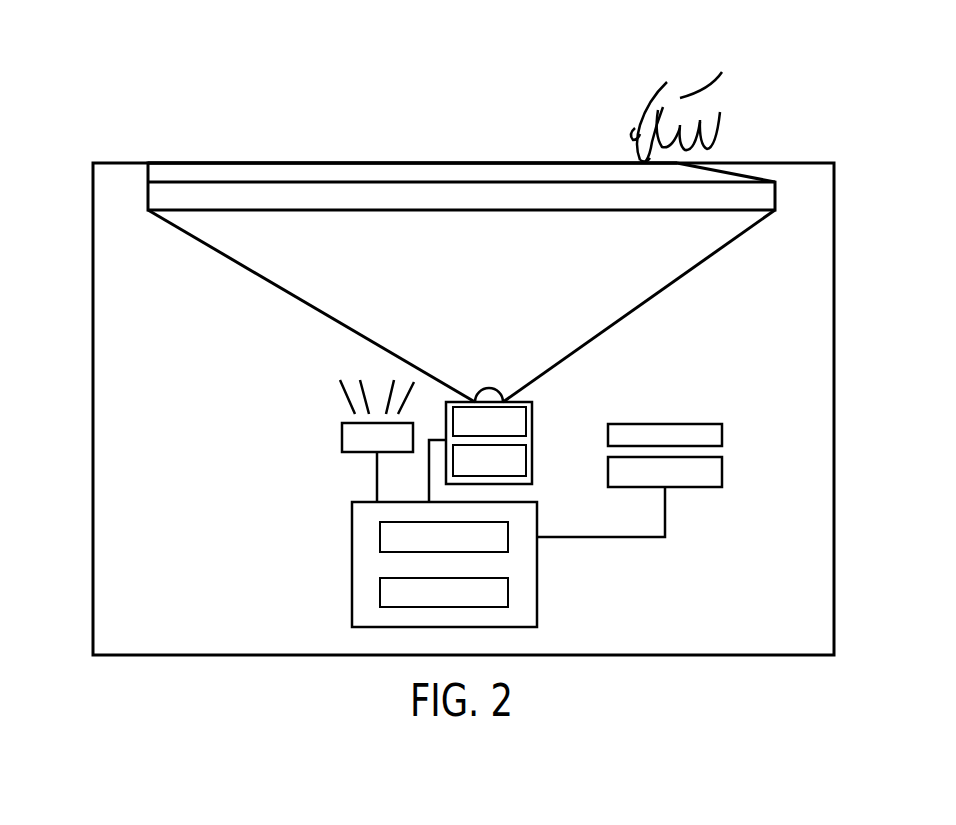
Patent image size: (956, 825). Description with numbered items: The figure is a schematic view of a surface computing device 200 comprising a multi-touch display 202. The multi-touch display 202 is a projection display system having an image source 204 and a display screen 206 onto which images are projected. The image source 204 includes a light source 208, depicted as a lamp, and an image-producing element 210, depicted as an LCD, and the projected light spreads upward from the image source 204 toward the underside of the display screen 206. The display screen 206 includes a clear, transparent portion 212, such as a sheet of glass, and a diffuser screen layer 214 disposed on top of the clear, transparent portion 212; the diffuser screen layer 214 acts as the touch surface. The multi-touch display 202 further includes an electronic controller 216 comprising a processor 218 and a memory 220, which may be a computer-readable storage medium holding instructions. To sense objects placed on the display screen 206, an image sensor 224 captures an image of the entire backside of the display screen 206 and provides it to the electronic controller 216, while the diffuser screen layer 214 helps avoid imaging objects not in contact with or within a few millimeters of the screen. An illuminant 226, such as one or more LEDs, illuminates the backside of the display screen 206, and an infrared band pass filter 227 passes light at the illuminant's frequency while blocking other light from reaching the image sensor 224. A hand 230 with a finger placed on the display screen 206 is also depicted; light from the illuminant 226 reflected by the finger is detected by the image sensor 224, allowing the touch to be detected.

The surface computing device 200 is at (128, 58).
The multi-touch display 202 is at (243, 128).
The image source 204 is at (552, 388).
The display screen 206 is at (313, 162).
The light source 208 is at (532, 460).
The image-producing element 210 is at (532, 420).
The clear, transparent portion 212 is at (459, 190).
The diffuser screen layer 214 is at (517, 178).
The electronic controller 216 is at (537, 572).
The processor 218 is at (380, 540).
The memory 220 is at (380, 596).
The image sensor 224 is at (708, 472).
The illuminant 226 is at (342, 440).
The infrared band pass filter 227 is at (710, 434).
The hand 230 is at (680, 100).